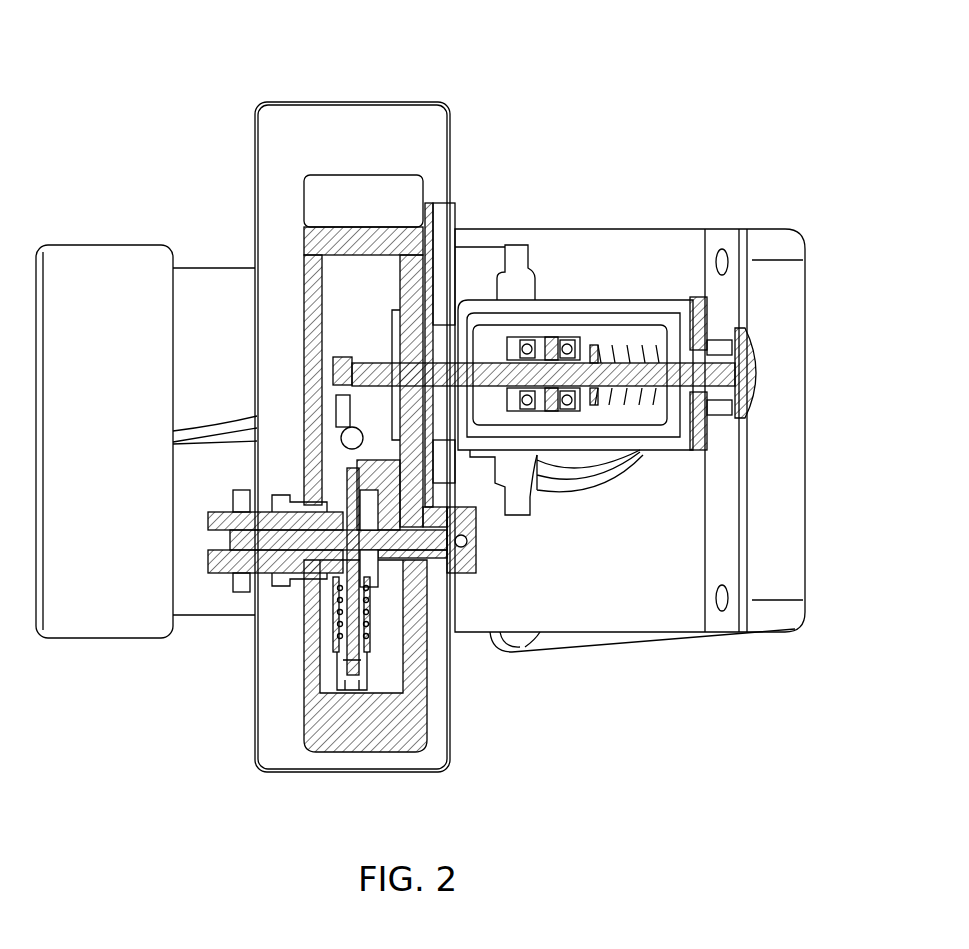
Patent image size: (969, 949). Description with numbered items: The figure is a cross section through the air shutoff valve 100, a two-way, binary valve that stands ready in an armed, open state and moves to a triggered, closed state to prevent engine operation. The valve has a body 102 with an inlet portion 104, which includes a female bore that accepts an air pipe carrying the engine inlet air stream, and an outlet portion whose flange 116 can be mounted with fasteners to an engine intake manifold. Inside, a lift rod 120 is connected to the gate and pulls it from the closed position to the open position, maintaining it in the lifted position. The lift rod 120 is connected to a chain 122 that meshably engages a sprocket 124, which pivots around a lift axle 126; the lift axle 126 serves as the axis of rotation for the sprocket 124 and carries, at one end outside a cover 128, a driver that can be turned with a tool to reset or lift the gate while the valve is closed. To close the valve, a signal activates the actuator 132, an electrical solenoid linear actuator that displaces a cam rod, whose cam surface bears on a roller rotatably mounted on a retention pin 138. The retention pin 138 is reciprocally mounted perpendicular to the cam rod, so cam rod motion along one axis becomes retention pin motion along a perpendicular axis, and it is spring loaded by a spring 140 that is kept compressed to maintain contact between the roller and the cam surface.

The air shutoff valve 100 is at (752, 88).
The body 102 is at (206, 282).
The inlet portion 104 is at (104, 630).
The flange 116 is at (785, 302).
The lift rod 120 is at (345, 367).
The chain 122 is at (370, 642).
The sprocket 124 is at (353, 657).
The lift axle 126 is at (337, 542).
The cover 128 is at (405, 727).
The actuator 132 is at (560, 488).
The retention pin 138 is at (598, 367).
The spring 140 is at (622, 405).